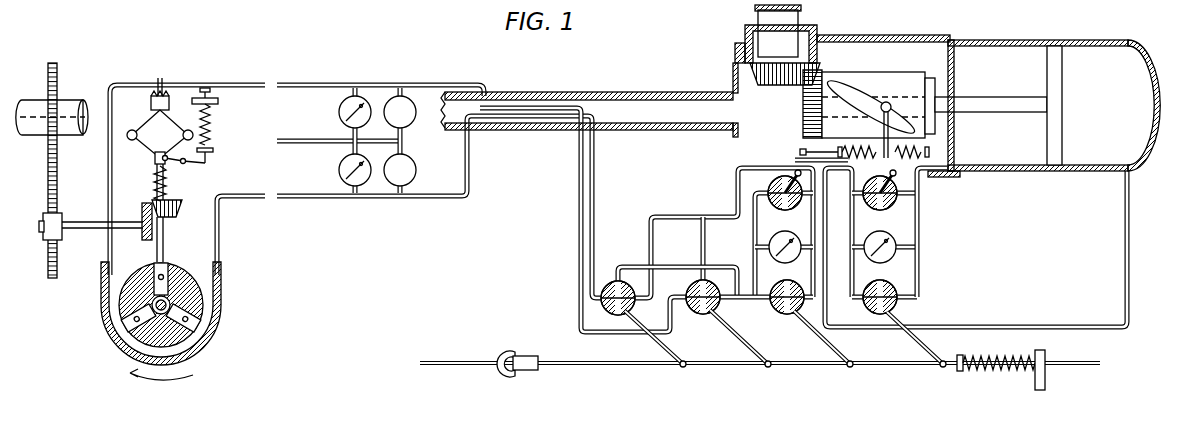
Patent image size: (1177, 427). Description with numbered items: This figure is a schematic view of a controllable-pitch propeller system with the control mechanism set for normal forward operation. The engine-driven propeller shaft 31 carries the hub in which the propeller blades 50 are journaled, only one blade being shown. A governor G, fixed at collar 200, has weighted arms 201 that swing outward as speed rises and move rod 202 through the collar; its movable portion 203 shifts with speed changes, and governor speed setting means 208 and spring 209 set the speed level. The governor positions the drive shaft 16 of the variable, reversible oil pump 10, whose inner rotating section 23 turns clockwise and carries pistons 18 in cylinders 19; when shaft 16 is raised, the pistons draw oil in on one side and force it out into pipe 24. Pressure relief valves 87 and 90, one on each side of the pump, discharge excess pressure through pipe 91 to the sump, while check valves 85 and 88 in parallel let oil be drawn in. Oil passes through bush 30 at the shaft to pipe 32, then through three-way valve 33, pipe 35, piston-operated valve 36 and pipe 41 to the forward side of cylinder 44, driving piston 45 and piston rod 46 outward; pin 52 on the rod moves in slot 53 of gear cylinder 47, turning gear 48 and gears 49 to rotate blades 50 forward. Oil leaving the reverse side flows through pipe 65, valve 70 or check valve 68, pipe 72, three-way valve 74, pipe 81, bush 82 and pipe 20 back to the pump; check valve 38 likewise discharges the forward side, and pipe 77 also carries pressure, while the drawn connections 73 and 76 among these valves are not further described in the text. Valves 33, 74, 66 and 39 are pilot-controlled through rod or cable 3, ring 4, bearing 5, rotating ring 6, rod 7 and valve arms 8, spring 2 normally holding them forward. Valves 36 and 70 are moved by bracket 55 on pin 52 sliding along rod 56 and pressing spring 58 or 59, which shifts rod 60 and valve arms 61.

The spring 2 is at (989, 371).
The rod or cable 3 is at (445, 361).
The ring 4 is at (500, 375).
The bearing 5 is at (509, 355).
The ring 6 is at (532, 356).
The rod 7 is at (575, 366).
The valve arms 8 is at (666, 361).
The pump 10 is at (196, 364).
The drive shaft 16 is at (108, 309).
The pump pistons 18 is at (194, 315).
The cylinders 19 is at (214, 334).
The pipe line 20 is at (273, 203).
The inner (rotating) section 23 is at (200, 290).
The pipe line 24 is at (107, 190).
The bush 30 is at (496, 88).
The propeller shaft 31 is at (636, 92).
The pipe line 32 is at (594, 214).
The three-way valve 33 is at (600, 295).
The pipe line 35 is at (648, 238).
The valve 36 is at (900, 207).
The check valve 38 is at (898, 243).
The valve 39 is at (900, 296).
The pipe line 41 is at (920, 264).
The cylinder 44 is at (1038, 172).
The piston 45 is at (1063, 105).
The piston rod 46 is at (1005, 97).
The gear cylinder 47 is at (912, 72).
The gear 48 is at (803, 108).
The gears 49 is at (748, 71).
The propeller blades 50 is at (758, 19).
The pin 52 is at (893, 72).
The slot 53 is at (850, 74).
The bracket 55 is at (872, 113).
The rod 56 is at (930, 153).
The spring 58 is at (812, 142).
The spring 59 is at (928, 150).
The rod 60 is at (818, 182).
The valve arms 61 is at (820, 160).
The pipe line 65 is at (1124, 243).
The valve 66 is at (788, 315).
The check valve 68 is at (802, 239).
The valve 70 is at (778, 178).
The pipe line 72 is at (753, 221).
The pipe 73 is at (742, 302).
The three-way valve 74 is at (704, 314).
The pipe 76 is at (701, 238).
The pipe line 77 is at (658, 270).
The pipe line 81 is at (576, 211).
The bush 82 is at (502, 134).
The check valve 85 is at (338, 173).
The pressure relief valve 87 is at (417, 172).
The check valve 88 is at (338, 112).
The pressure relief valve 90 is at (415, 125).
The pipe line 91 is at (300, 145).
The collar 200 is at (165, 94).
The weighted arms 201 is at (155, 160).
The rod 202 is at (166, 227).
The movable portion 203 is at (186, 165).
The governor speed setting means 208 is at (221, 101).
The spring 209 is at (214, 129).
The governor G is at (147, 111).